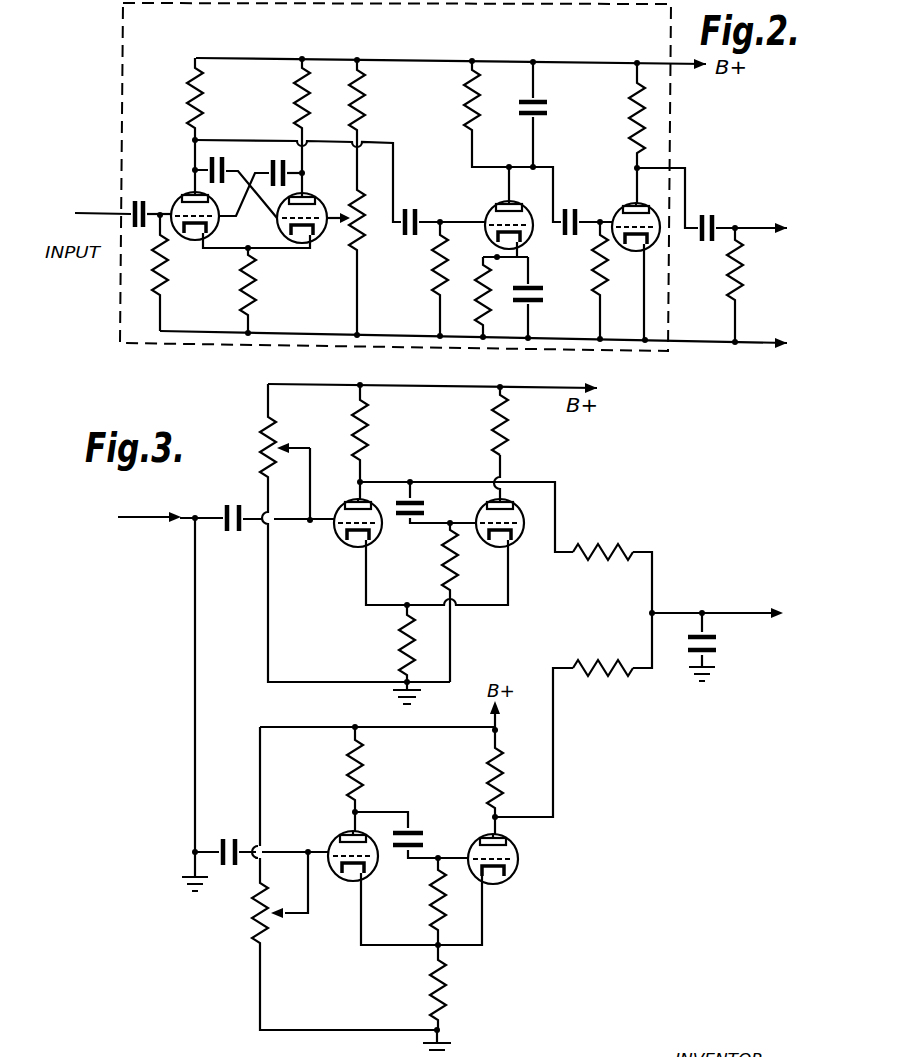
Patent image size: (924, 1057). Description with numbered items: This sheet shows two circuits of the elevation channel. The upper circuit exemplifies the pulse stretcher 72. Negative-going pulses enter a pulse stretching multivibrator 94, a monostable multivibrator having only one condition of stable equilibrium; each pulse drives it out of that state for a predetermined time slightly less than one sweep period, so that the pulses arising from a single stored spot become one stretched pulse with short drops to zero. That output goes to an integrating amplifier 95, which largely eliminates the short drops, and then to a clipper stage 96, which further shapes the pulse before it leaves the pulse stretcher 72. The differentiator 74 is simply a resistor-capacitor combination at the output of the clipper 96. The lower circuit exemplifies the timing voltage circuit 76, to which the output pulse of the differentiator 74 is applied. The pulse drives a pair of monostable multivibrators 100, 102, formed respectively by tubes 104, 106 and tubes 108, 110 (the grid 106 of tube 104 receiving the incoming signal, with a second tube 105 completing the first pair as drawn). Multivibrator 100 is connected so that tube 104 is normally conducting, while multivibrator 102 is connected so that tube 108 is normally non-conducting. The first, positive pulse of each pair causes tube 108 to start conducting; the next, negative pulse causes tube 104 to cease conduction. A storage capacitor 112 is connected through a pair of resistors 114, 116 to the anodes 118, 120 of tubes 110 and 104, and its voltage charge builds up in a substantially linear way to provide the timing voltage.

In FIG. 2, the pulse stretcher 72 is at (774, 152).
In FIG. 2, the differentiator 74 is at (803, 290).
In FIG. 3, the differentiator 74 is at (145, 596).
In FIG. 3, the timing voltage circuit 76 is at (678, 600).
In FIG. 2, the pulse stretching multivibrator 94 is at (361, 49).
In FIG. 2, the integrating amplifier 95 is at (543, 52).
In FIG. 2, the clipper stage 96 is at (606, 115).
In FIG. 3, the monostable multivibrator 100 is at (548, 473).
In FIG. 3, the monostable multivibrator 102 is at (540, 808).
In FIG. 3, the tube 104 is at (356, 521).
In FIG. 3, the second multivibrator tube 105 is at (515, 546).
In FIG. 3, the grid 106 is at (379, 524).
In FIG. 3, the tube 108 is at (341, 880).
In FIG. 3, the tube 110 is at (516, 875).
In FIG. 3, the storage capacitor 112 is at (718, 638).
In FIG. 3, the resistor 114 is at (634, 530).
In FIG. 3, the resistor 116 is at (624, 646).
In FIG. 3, the anode 118 is at (510, 845).
In FIG. 3, the anode 120 is at (350, 506).